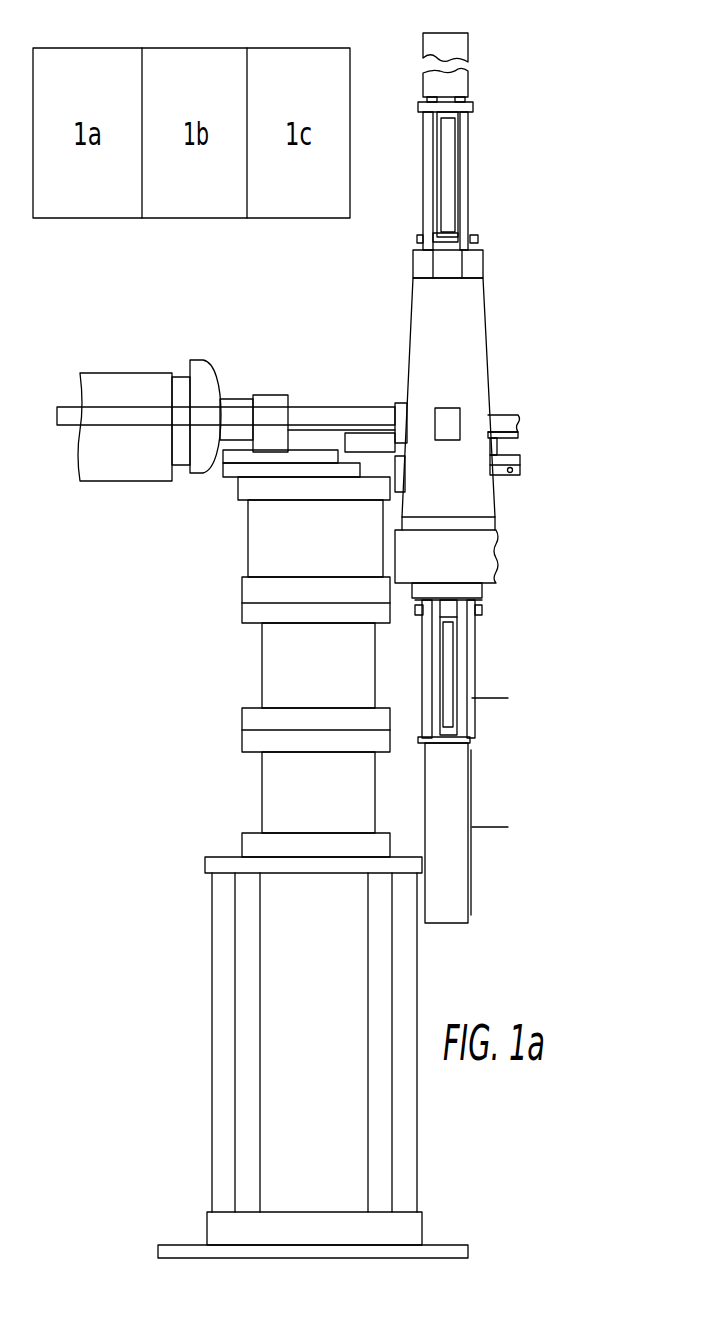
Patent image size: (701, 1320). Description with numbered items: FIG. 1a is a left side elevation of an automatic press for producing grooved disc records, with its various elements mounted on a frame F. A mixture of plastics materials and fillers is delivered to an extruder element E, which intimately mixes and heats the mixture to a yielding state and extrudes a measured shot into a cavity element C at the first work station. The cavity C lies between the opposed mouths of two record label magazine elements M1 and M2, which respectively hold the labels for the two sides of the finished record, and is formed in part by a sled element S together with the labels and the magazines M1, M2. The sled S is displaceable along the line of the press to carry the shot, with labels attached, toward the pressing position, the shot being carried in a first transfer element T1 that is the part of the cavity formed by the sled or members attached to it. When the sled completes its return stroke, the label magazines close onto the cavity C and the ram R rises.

The record label magazine element M1 is at (486, 199).
The extruder element E is at (274, 359).
The sled element S is at (514, 406).
The first transfer element T1 is at (510, 438).
The cavity element C is at (528, 445).
The frame F is at (508, 560).
The record label magazine element M2 is at (481, 840).
The ram R is at (270, 1010).